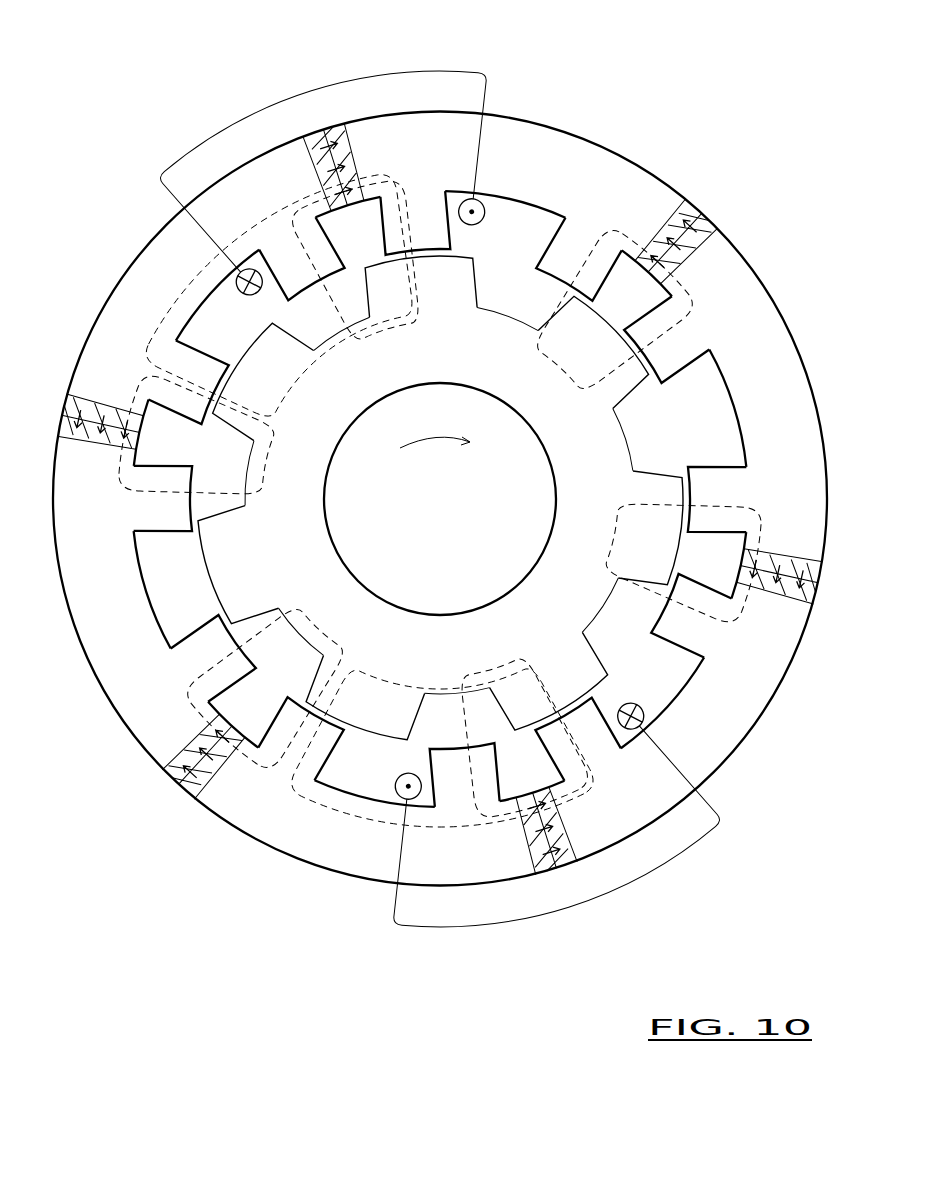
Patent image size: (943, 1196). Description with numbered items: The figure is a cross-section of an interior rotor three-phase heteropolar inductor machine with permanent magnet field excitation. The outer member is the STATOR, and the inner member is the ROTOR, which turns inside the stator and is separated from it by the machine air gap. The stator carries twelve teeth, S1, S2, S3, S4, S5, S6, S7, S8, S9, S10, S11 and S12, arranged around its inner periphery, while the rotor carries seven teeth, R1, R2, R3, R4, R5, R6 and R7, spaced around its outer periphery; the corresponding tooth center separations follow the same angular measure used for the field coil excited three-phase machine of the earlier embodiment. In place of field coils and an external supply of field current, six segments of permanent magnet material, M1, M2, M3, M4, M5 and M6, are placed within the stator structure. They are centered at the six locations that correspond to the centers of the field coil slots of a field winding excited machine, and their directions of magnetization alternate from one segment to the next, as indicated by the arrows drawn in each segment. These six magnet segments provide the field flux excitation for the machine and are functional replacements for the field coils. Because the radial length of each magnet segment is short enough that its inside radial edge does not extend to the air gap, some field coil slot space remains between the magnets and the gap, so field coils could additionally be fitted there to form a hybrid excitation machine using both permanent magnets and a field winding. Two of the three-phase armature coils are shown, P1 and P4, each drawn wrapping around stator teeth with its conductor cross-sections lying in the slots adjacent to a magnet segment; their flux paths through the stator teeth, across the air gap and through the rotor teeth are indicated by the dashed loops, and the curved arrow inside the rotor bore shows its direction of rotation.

The stator pole S1 is at (577, 739).
The stator pole S2 is at (465, 775).
The stator pole S3 is at (301, 738).
The stator pole S4 is at (213, 658).
The stator pole S5 is at (163, 498).
The stator pole S6 is at (188, 383).
The stator pole S7 is at (301, 258).
The stator pole S8 is at (415, 223).
The stator pole S9 is at (579, 259).
The stator pole S10 is at (666, 339).
The stator pole S11 is at (717, 499).
The stator pole S12 is at (691, 616).
The rotor pole R1 is at (550, 683).
The rotor pole R2 is at (364, 700).
The rotor pole R3 is at (235, 566).
The rotor pole R4 is at (261, 380).
The rotor pole R5 is at (421, 284).
The rotor pole R6 is at (595, 350).
The rotor pole R7 is at (653, 528).
The permanent magnet segment M1 is at (548, 843).
The permanent magnet segment M2 is at (190, 765).
The permanent magnet segment M3 is at (80, 424).
The permanent magnet segment M4 is at (334, 156).
The permanent magnet segment M5 is at (684, 234).
The permanent magnet segment M6 is at (799, 574).
The phase coil P1 is at (517, 927).
The phase coil P4 is at (312, 90).
The rotor ROTOR is at (440, 510).
The stator STATOR is at (710, 762).